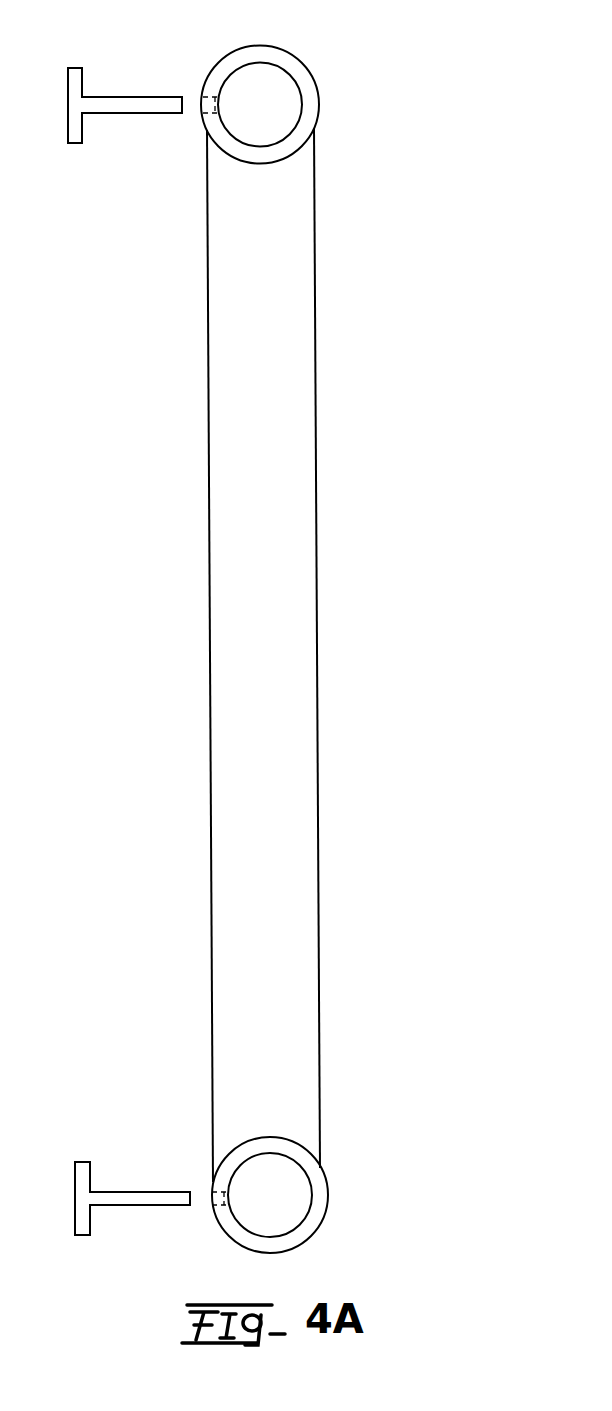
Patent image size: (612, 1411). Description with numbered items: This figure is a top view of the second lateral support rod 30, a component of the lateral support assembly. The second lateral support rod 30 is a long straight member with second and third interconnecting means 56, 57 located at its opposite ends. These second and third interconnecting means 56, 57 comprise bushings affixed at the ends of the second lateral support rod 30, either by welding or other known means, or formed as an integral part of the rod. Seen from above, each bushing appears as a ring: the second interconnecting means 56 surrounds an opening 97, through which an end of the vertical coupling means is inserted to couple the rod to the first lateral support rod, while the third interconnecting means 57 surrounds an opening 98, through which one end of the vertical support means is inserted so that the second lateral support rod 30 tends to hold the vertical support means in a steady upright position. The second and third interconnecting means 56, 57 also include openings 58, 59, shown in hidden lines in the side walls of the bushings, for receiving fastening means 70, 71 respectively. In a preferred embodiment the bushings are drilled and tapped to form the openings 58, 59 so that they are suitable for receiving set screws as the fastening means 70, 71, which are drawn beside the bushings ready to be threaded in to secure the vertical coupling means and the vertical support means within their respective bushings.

The second lateral support rod 30 is at (305, 465).
The second interconnecting means 56 is at (288, 62).
The third interconnecting means 57 is at (312, 1230).
The opening 58 is at (210, 92).
The opening 59 is at (222, 1222).
The fastening means 70 is at (68, 133).
The fastening means 71 is at (75, 1175).
The opening 97 is at (257, 86).
The opening 98 is at (290, 1170).